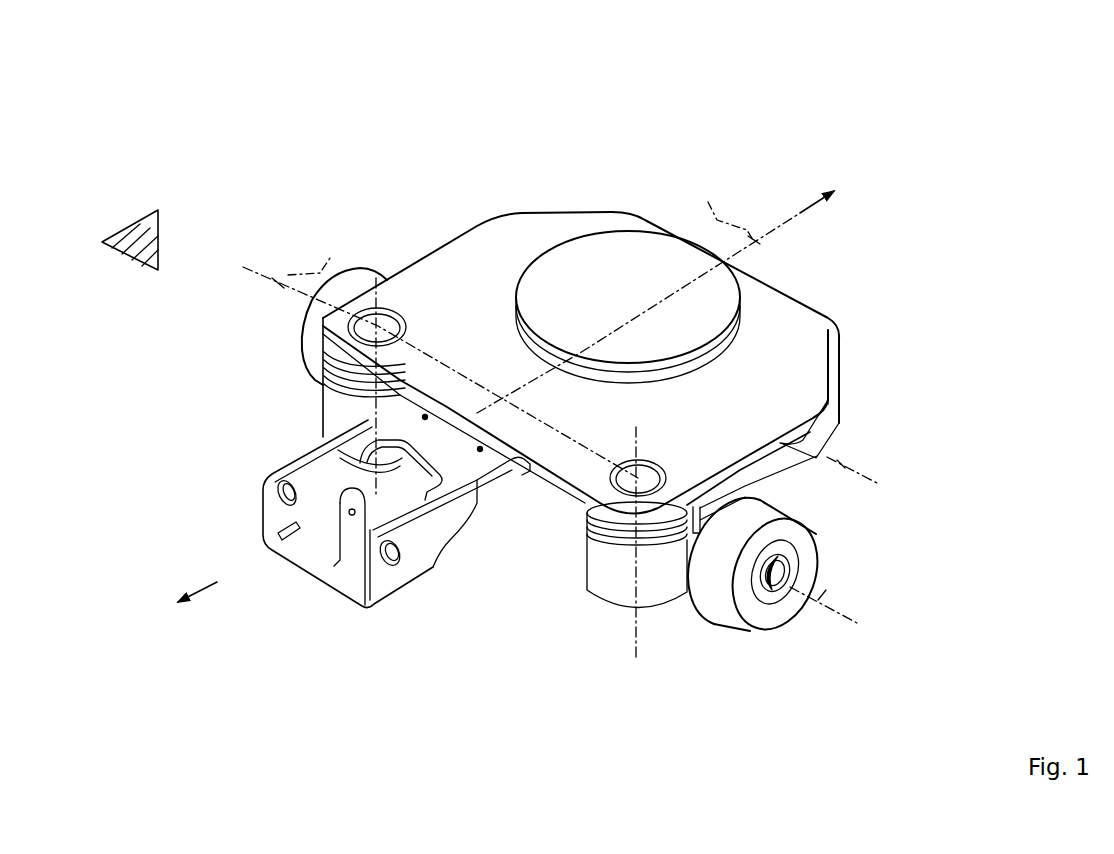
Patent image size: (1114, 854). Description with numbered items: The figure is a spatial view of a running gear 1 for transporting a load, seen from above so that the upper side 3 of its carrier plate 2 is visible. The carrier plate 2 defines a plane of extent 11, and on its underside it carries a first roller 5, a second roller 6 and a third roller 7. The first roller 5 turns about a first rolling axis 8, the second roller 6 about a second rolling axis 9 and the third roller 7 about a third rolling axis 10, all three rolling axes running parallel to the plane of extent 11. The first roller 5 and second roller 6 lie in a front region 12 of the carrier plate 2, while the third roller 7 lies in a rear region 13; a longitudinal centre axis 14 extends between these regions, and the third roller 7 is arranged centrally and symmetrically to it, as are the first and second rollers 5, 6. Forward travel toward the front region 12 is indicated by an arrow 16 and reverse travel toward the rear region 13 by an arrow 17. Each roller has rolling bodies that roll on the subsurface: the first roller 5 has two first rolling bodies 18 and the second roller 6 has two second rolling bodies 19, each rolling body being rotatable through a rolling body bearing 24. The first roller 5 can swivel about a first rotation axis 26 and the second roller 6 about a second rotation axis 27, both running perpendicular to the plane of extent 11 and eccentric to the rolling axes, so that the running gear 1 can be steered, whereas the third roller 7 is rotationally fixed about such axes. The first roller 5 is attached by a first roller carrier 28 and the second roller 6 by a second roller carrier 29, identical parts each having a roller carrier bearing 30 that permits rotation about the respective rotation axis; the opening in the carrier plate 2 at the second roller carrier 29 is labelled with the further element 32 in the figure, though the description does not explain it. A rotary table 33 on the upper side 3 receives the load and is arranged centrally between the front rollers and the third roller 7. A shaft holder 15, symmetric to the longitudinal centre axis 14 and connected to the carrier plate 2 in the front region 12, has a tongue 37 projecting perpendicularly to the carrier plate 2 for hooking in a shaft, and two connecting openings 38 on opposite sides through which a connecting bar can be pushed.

The running gear 1 is at (958, 182).
The carrier plate 2 is at (449, 276).
The upper side 3 is at (803, 333).
The first roller 5 is at (708, 660).
The second roller 6 is at (248, 343).
The third roller 7 is at (883, 392).
The first rolling axis 8 is at (822, 592).
The second rolling axis 9 is at (305, 259).
The third rolling axis 10 is at (843, 461).
The plane of extent 11 is at (143, 240).
The front region 12 is at (263, 251).
The rear region 13 is at (545, 188).
The longitudinal centre axis 14 is at (638, 294).
The shaft holder 15 is at (348, 636).
The arrow 16 is at (200, 592).
The arrow 17 is at (843, 198).
The first rolling bodies 18 is at (738, 505).
The second rolling bodies 19 is at (365, 277).
The rolling body bearing 24 is at (764, 599).
The first rotation axis 26 is at (636, 660).
The second rotation axis 27 is at (327, 419).
The first roller carrier 28 is at (564, 620).
The second roller carrier 29 is at (292, 438).
The roller carrier bearing 30 is at (320, 397).
The bearing opening 32 is at (572, 476).
The rotary table 33 is at (620, 224).
The tongue 37 is at (335, 547).
The connecting openings 38 is at (298, 503).